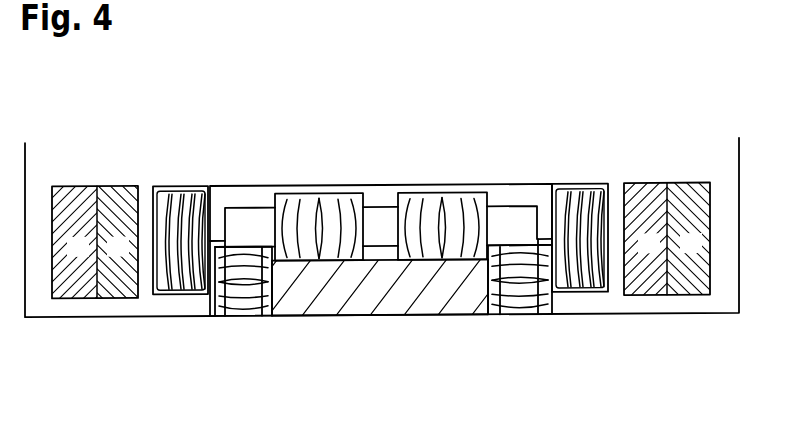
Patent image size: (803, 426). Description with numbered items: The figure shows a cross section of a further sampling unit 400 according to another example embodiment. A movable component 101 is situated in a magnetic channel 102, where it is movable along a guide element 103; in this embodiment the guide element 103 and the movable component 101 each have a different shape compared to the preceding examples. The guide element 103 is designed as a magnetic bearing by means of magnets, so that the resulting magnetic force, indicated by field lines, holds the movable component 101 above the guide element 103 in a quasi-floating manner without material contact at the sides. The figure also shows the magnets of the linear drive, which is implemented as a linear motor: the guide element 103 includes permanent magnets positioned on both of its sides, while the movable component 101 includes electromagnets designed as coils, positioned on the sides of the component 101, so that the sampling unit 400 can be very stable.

The sampling unit 400 is at (641, 71).
The movable component 101 is at (382, 185).
The magnetic channel 102 is at (725, 275).
The guide element 103 is at (388, 302).